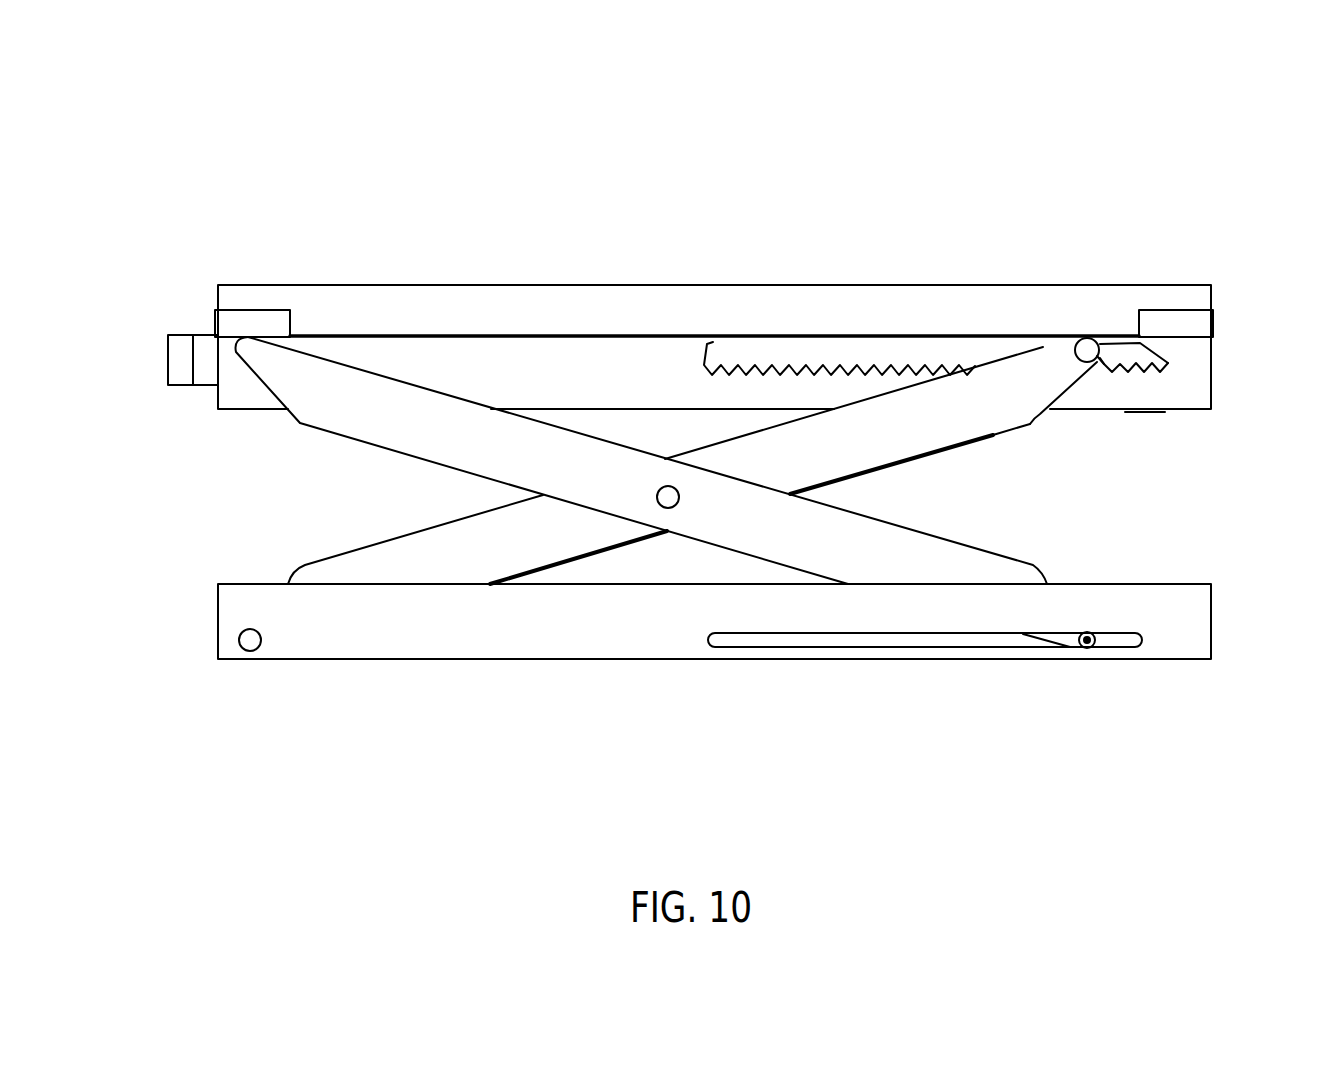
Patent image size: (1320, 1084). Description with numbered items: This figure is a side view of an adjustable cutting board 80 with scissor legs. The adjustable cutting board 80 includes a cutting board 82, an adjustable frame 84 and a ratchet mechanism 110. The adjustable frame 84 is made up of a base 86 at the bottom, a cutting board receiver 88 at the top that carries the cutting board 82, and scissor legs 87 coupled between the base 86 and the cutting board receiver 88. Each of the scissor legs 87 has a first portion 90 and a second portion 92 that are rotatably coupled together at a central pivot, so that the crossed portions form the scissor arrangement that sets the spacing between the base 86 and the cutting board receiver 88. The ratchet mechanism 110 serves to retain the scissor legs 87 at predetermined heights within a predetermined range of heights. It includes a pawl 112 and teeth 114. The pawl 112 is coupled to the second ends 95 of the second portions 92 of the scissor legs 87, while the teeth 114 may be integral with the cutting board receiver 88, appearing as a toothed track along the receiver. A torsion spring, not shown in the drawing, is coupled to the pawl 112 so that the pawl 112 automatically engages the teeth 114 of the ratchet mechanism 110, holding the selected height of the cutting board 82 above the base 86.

The adjustable cutting board 80 is at (512, 187).
The cutting board 82 is at (633, 302).
The adjustable frame 84 is at (150, 483).
The base 86 is at (487, 640).
The scissor legs 87 is at (337, 507).
The cutting board receiver 88 is at (412, 360).
The first portion 90 is at (800, 547).
The second portion 92 is at (813, 453).
The second ends 95 is at (1053, 370).
The ratchet mechanism 110 is at (1088, 320).
The pawl 112 is at (1137, 343).
The teeth 114 is at (1117, 368).